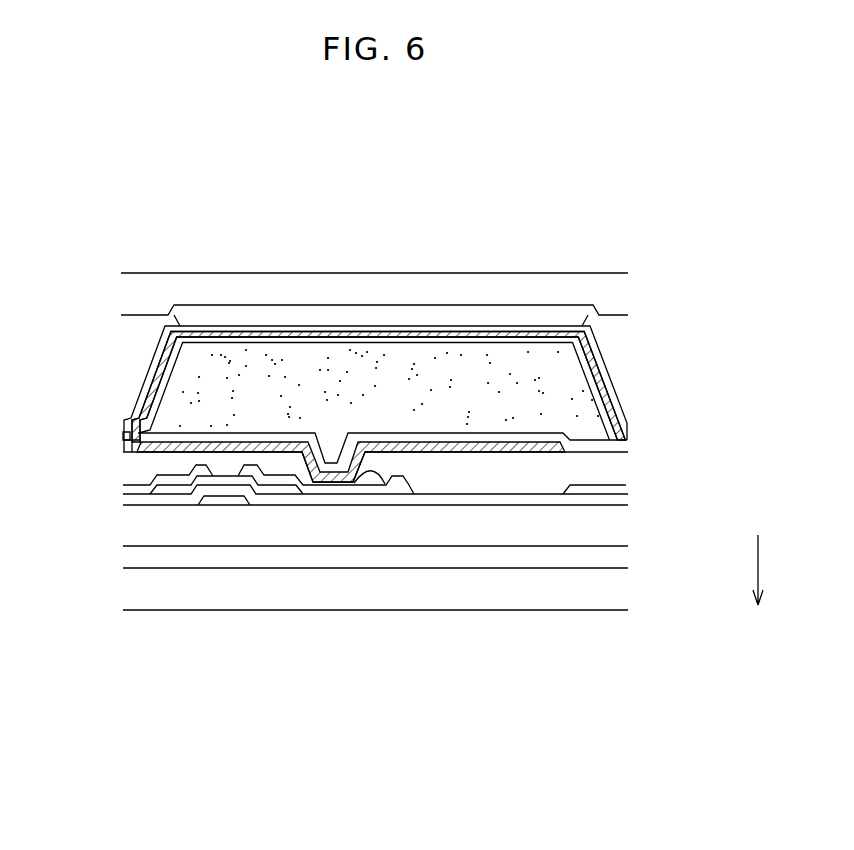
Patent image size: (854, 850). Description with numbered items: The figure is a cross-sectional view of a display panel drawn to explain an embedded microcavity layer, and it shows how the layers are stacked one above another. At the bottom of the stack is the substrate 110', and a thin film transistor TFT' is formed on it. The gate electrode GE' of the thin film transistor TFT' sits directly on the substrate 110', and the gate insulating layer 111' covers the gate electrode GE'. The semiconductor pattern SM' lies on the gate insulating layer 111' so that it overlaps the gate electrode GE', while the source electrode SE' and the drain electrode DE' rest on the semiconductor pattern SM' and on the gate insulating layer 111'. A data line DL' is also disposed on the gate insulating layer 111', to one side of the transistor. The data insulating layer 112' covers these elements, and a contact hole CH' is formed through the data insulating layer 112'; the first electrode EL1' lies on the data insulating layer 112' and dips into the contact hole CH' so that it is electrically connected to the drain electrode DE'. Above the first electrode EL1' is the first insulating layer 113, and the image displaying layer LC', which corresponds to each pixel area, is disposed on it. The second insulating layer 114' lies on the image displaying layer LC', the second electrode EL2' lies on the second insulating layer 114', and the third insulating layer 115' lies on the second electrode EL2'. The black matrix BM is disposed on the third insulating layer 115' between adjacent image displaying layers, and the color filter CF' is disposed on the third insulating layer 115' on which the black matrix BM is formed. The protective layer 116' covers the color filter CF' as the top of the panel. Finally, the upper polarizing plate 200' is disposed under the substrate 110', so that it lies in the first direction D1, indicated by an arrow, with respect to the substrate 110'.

The protective layer 116' is at (332, 294).
The black matrix BM is at (125, 337).
The color filter CF' is at (378, 326).
The second electrode EL2' is at (331, 387).
The image displaying layer LC' is at (382, 337).
The first electrode EL1' is at (351, 346).
The third insulating layer 115' is at (84, 426).
The second insulating layer 114' is at (89, 452).
The first insulating layer 113 is at (125, 458).
The data insulating layer 112' is at (420, 468).
The data line DL' is at (634, 488).
The gate insulating layer 111' is at (420, 511).
The substrate 110' is at (420, 540).
The upper polarizing plate 200' is at (343, 579).
The first direction D1 is at (759, 584).
The thin film transistor TFT' is at (268, 591).
The gate electrode GE' is at (224, 588).
The semiconductor pattern SM' is at (226, 578).
The source electrode SE' is at (168, 572).
The drain electrode DE' is at (326, 572).
The contact hole CH' is at (387, 575).